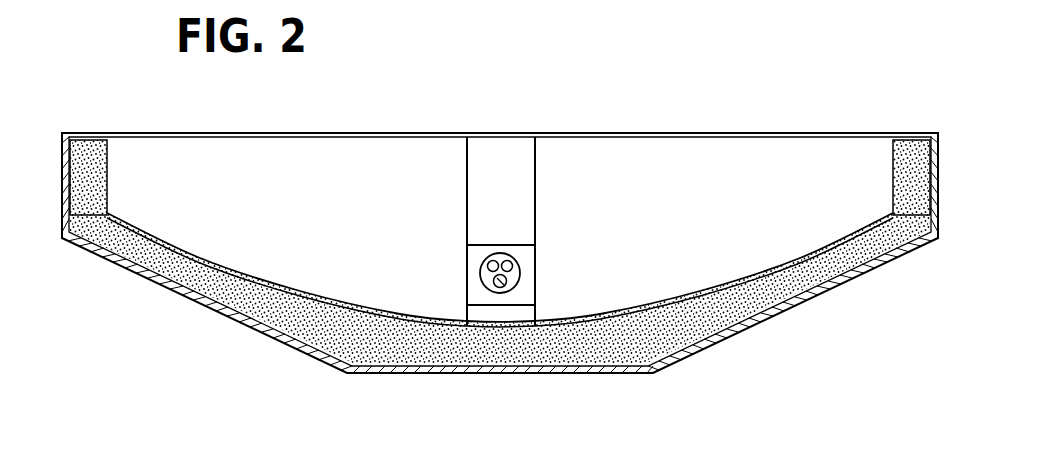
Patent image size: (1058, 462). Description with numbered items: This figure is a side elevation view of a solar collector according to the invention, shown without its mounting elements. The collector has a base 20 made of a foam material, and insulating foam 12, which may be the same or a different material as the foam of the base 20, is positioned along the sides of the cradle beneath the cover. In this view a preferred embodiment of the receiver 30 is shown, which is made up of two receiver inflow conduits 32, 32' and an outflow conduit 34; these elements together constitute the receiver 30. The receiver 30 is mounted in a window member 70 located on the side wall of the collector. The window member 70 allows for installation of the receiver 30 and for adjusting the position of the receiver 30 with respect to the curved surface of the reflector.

The insulating foam 12 is at (907, 158).
The base 20 is at (644, 350).
The receiver 30 is at (490, 285).
The receiver inflow conduit 32 is at (527, 166).
The receiver inflow conduit 32' is at (474, 166).
The outflow conduit 34 is at (504, 284).
The window member 70 is at (475, 257).